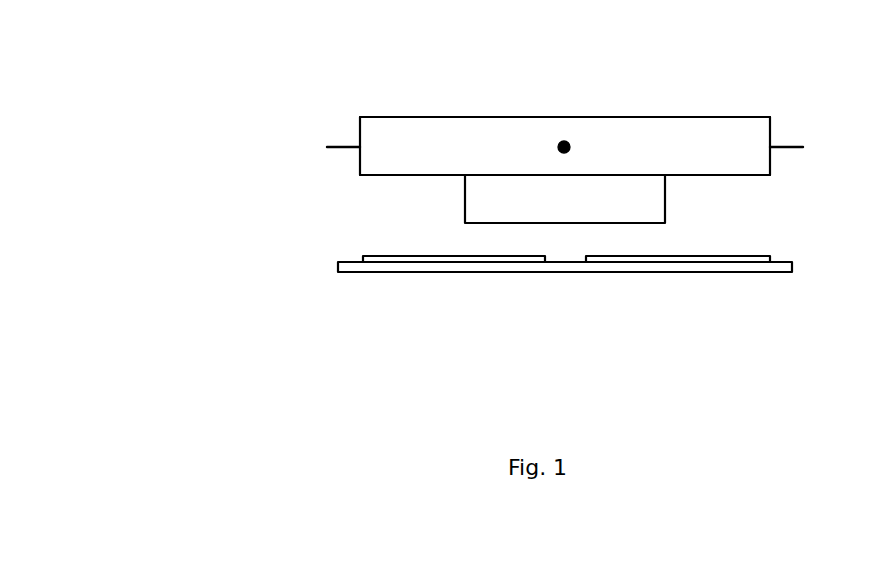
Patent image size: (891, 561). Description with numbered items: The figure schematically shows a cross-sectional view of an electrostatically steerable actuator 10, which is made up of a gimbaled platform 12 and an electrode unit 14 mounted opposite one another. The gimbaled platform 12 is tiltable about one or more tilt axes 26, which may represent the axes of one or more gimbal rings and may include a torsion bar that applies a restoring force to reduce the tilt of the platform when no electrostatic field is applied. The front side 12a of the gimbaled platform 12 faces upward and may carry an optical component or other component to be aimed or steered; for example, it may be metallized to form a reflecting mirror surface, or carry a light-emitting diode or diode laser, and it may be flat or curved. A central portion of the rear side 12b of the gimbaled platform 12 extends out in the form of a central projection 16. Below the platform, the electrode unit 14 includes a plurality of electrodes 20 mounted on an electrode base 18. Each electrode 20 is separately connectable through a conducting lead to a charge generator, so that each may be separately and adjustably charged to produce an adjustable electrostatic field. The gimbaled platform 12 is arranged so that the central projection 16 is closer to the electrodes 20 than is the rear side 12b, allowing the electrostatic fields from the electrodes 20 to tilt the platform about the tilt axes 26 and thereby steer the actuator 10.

The electrostatically steerable actuator 10 is at (152, 127).
The gimbaled platform 12 is at (360, 127).
The front side 12a is at (730, 117).
The rear side 12b is at (748, 175).
The electrode unit 14 is at (340, 280).
The central projection 16 is at (465, 212).
The electrode base 18 is at (690, 270).
The electrodes 20 is at (367, 256).
The tilt axes 26 is at (561, 142).